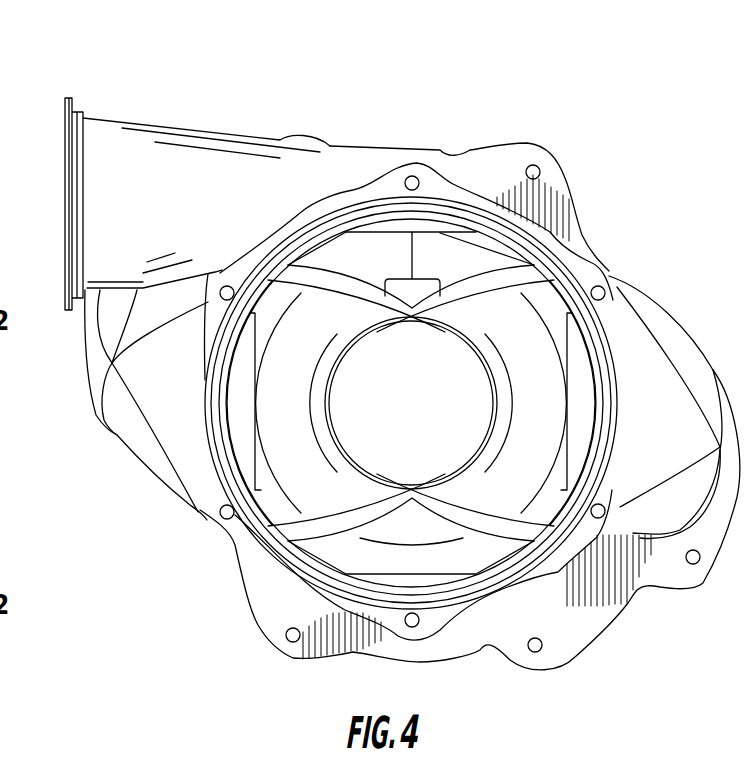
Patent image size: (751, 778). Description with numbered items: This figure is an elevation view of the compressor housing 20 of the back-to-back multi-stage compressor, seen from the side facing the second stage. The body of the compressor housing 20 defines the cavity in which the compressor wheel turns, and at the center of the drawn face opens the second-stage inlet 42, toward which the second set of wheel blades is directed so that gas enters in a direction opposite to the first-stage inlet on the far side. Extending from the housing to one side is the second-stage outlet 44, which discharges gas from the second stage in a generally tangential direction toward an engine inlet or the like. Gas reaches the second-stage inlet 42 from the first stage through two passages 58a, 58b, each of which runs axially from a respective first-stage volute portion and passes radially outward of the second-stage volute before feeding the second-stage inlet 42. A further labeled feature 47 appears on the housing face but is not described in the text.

The compressor housing 20 is at (386, 364).
The second-stage inlet 42 is at (297, 475).
The second-stage outlet 44 is at (63, 128).
The reinforcing ribs 47 is at (372, 305).
The passage 58a is at (252, 388).
The passage 58b is at (572, 388).